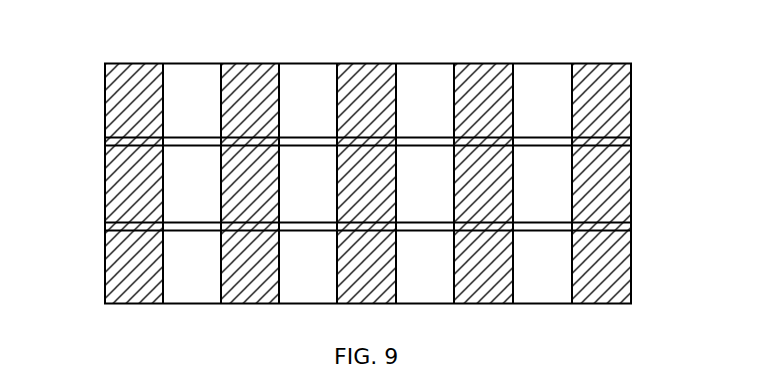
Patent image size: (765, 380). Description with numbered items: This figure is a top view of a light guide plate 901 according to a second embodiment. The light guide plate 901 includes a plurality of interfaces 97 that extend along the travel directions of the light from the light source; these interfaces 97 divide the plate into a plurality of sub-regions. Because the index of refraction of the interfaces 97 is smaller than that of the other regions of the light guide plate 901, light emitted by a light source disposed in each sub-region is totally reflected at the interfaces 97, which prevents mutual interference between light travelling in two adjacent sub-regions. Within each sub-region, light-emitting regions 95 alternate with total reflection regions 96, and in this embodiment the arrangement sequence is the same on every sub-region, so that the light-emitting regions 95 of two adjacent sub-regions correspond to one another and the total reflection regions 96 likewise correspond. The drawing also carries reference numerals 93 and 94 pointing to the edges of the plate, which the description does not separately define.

The light guide plate 901 is at (54, 27).
The substrate structure 93 is at (106, 176).
The lower layer 94 is at (633, 253).
The light-emitting regions 95 is at (618, 62).
The total reflection regions 96 is at (427, 80).
The interfaces 97 is at (619, 145).